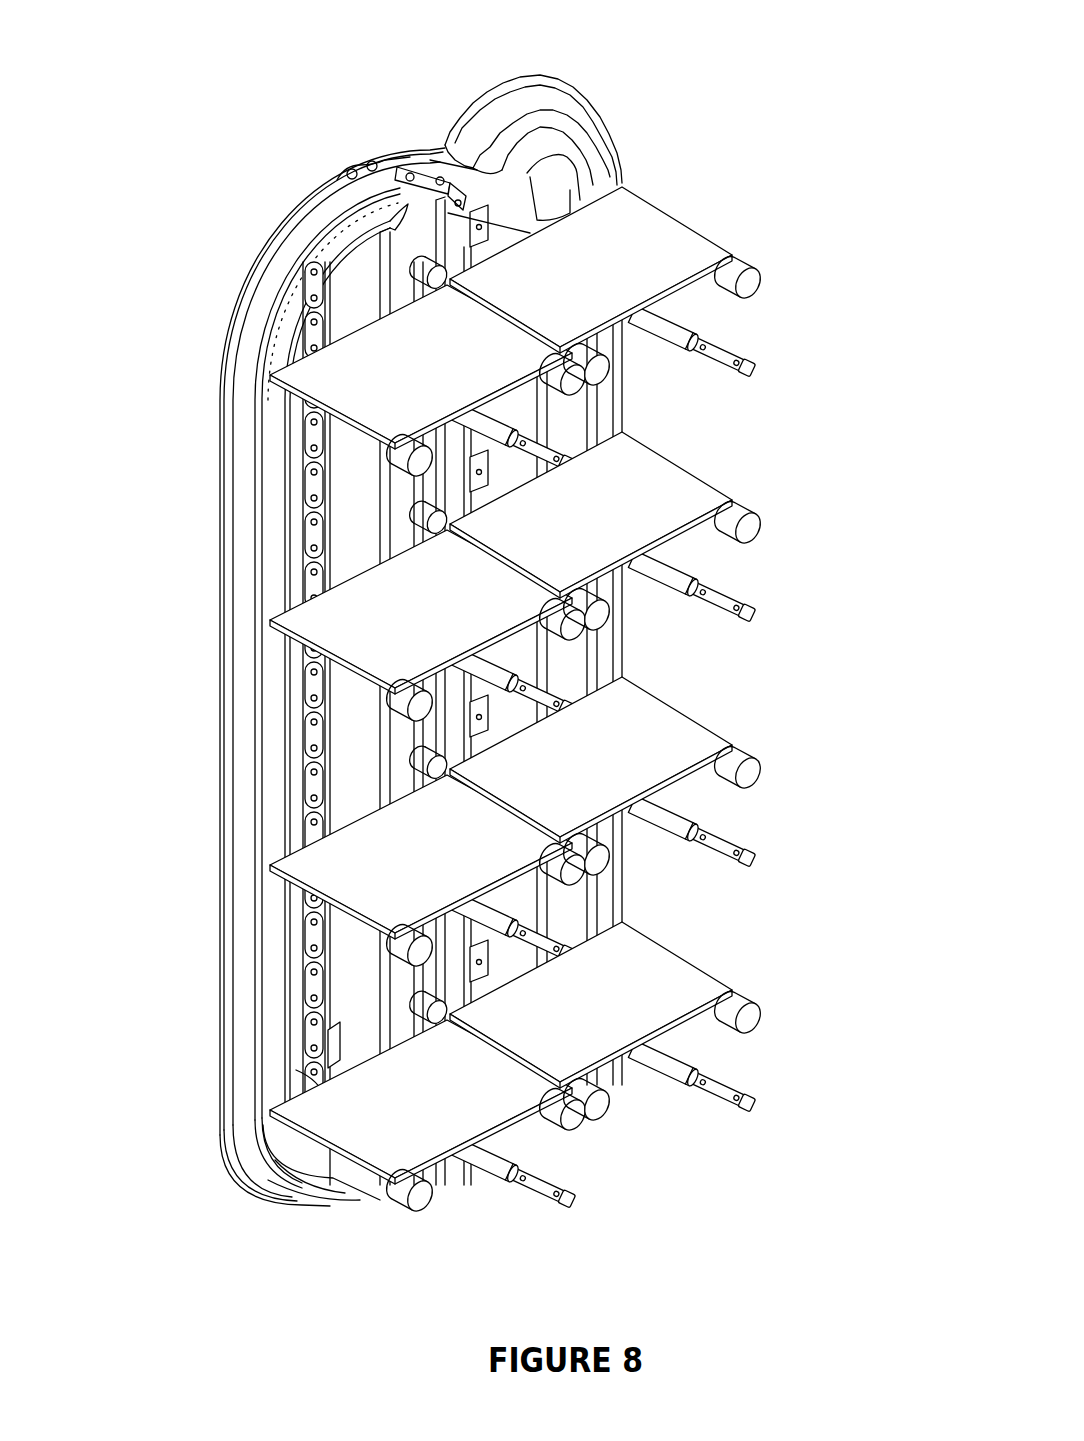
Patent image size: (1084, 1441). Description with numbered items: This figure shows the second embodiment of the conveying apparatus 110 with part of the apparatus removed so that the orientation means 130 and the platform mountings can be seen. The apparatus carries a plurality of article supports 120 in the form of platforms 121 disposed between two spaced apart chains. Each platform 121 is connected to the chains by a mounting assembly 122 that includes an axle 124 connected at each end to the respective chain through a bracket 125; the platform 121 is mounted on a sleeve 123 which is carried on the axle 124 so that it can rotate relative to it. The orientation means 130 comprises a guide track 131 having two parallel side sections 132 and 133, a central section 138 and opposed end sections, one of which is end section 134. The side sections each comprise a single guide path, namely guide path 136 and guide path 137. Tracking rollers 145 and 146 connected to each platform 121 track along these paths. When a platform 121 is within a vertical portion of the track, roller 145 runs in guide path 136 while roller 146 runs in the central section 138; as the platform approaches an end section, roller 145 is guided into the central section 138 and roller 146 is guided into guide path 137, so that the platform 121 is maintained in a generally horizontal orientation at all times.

The conveying apparatus 110 is at (170, 558).
The article supports 120 is at (673, 783).
The platform 121 is at (673, 761).
The mounting assembly 122 is at (708, 858).
The sleeve 123 is at (313, 1058).
The axle 124 is at (617, 1173).
The bracket 125 is at (297, 1040).
The orientation means 130 is at (572, 78).
The guide track 131 is at (343, 213).
The side section 132 is at (243, 785).
The side section 133 is at (617, 641).
The end section 134 is at (473, 112).
The guide path 136 is at (285, 468).
The guide path 137 is at (608, 900).
The central section 138 is at (420, 228).
The tracking roller 145 is at (617, 380).
The tracking roller 146 is at (740, 282).